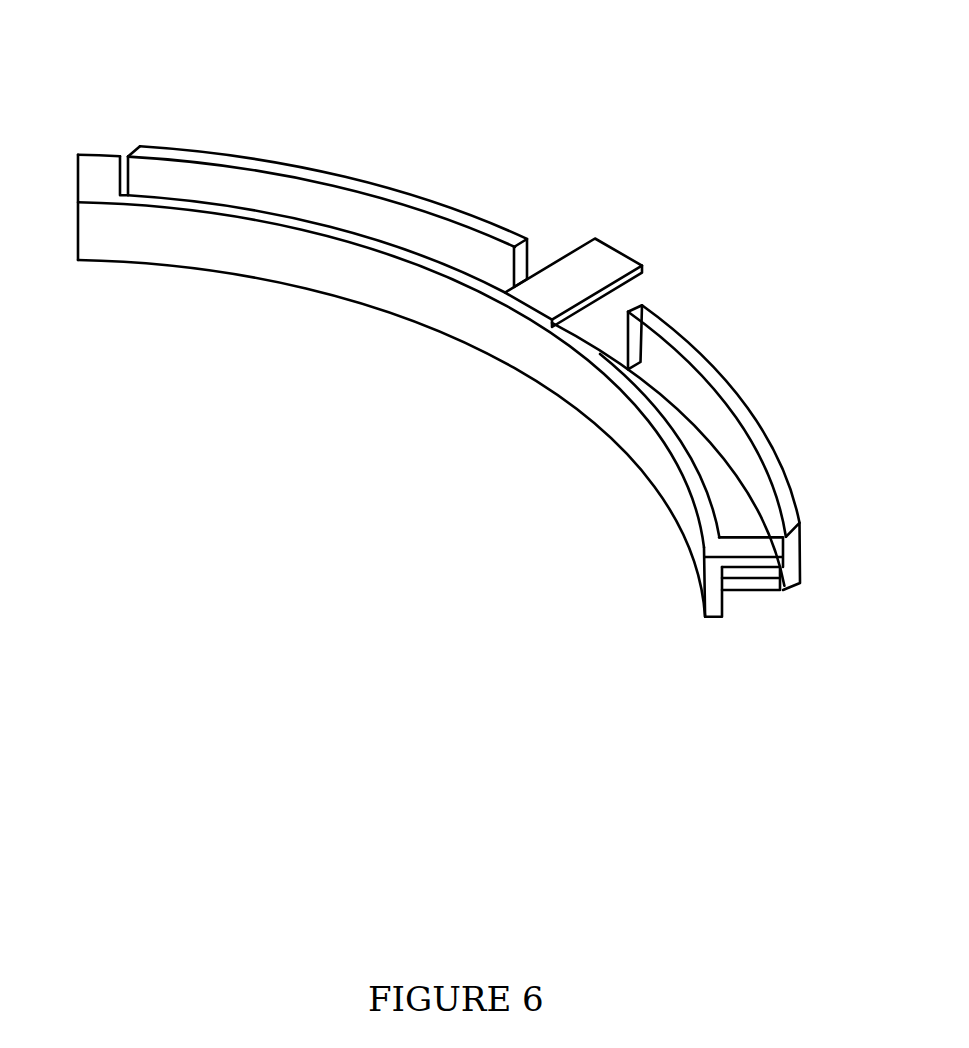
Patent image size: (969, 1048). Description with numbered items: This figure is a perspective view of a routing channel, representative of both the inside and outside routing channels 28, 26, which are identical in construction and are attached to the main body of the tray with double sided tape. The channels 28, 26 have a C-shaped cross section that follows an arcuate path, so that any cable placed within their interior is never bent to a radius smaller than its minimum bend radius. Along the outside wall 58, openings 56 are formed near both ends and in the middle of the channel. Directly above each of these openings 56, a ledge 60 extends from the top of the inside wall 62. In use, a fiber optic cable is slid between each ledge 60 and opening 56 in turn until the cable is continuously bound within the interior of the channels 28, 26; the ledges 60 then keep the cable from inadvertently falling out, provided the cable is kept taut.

The outside routing channel 26 is at (460, 316).
The inside routing channel 28 is at (460, 342).
The opening 56 is at (122, 178).
The outside wall 58 is at (702, 358).
The ledge 60 is at (92, 168).
The inside wall 62 is at (517, 347).